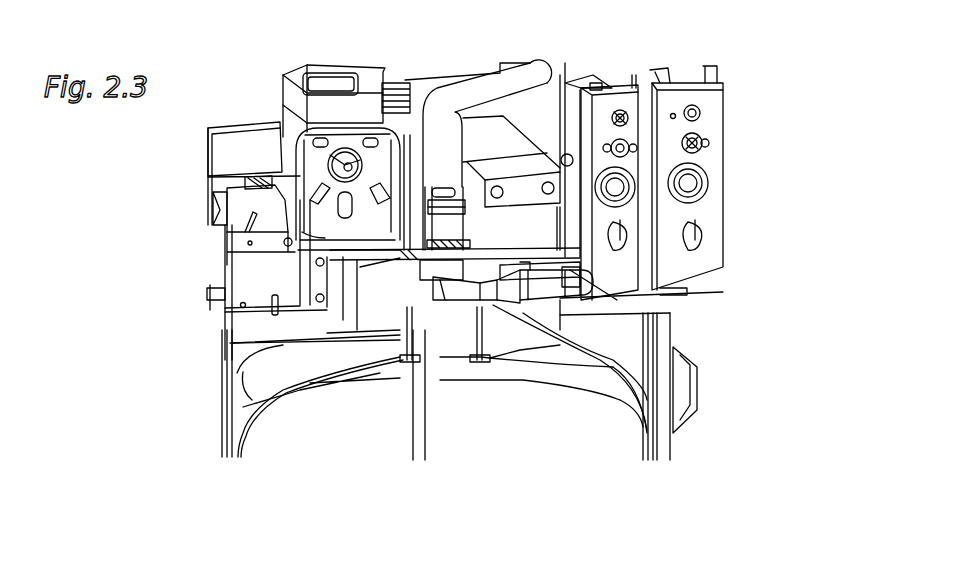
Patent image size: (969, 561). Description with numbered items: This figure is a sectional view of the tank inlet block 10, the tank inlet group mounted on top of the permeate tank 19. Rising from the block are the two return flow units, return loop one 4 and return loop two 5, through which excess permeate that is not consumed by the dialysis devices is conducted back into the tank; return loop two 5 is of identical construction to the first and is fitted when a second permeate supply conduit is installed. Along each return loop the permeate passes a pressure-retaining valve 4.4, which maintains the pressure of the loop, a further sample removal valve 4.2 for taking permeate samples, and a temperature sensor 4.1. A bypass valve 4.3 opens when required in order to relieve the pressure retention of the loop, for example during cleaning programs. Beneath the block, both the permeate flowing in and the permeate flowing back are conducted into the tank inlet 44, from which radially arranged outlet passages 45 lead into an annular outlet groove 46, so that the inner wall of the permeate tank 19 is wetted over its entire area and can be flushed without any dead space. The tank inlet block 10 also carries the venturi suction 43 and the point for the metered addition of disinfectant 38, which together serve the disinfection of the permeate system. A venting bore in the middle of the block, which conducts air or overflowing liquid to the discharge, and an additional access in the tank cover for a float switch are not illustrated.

The return flow unit 4 is at (612, 88).
The return flow unit 5 is at (741, 160).
The temperature sensor 4.1 is at (702, 145).
The sample removal valve 4.2 is at (700, 112).
The bypass valve 4.3 is at (702, 237).
The pressure-retaining valve 4.4 is at (705, 185).
The tank inlet block 10 is at (380, 252).
The permeate tank 19 is at (530, 409).
The metered addition disinfectant 38 is at (553, 368).
The venturi suction 43 is at (595, 300).
The tank inlet 44 is at (480, 362).
The outlet passages 45 is at (435, 362).
The outlet groove 46 is at (400, 368).